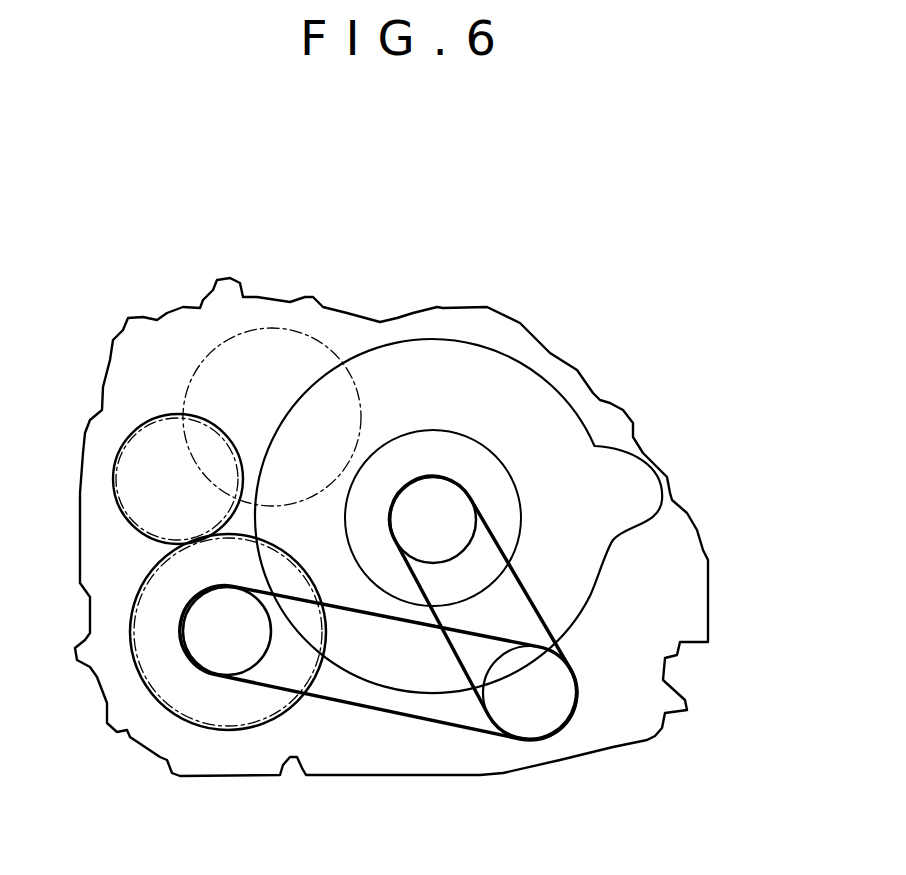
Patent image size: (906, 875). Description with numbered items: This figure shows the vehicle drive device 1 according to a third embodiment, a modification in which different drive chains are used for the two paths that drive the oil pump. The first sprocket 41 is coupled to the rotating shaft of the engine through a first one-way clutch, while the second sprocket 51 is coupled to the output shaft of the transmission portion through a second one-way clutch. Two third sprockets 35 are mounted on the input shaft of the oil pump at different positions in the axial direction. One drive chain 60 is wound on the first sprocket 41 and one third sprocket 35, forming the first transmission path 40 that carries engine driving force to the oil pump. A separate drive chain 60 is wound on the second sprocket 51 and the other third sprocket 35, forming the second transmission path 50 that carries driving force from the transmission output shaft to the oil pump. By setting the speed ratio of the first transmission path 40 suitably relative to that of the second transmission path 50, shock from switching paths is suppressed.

The vehicle drive device 1 is at (302, 272).
The third sprocket 35 is at (557, 713).
The first transmission path 40 is at (535, 570).
The first sprocket 41 is at (530, 537).
The second transmission path 50 is at (352, 720).
The second sprocket 51 is at (268, 660).
The drive chain 60 is at (528, 597).